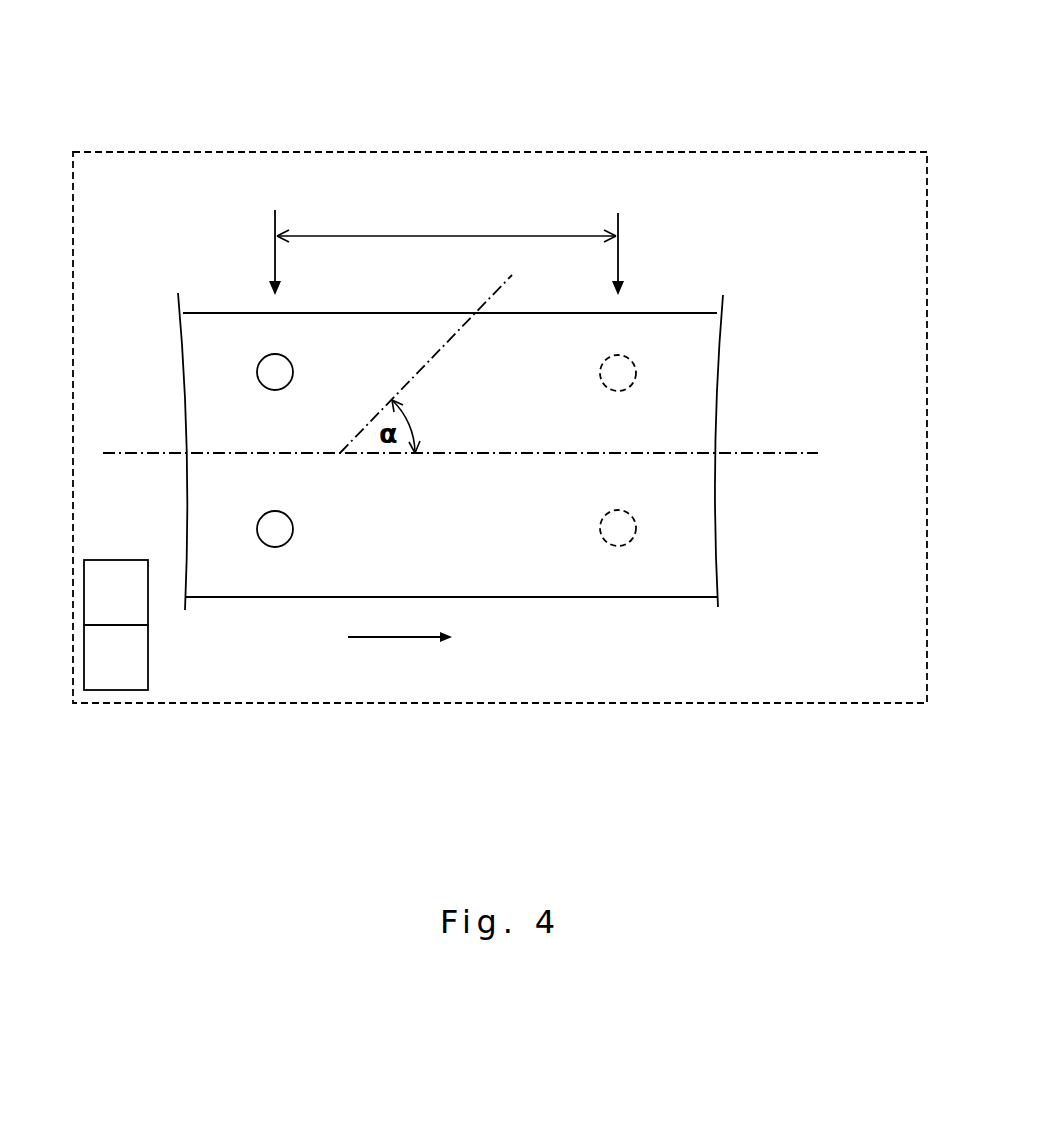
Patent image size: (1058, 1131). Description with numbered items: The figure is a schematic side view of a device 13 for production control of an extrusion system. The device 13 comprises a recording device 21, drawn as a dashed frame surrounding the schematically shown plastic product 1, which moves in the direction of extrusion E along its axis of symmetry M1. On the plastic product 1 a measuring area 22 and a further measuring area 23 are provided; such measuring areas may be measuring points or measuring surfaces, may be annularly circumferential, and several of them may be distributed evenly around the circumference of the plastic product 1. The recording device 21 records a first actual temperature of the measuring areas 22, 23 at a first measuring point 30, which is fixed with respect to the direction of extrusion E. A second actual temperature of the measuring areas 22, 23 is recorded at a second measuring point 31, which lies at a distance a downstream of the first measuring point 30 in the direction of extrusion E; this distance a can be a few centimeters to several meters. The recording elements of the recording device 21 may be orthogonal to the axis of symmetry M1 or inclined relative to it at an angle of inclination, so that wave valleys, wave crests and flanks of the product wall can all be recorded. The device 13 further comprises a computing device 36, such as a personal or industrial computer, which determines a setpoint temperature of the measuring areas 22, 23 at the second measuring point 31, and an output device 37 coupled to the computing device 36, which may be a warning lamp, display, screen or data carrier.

The plastic product 1 is at (699, 305).
The device 13 is at (496, 108).
The recording device 21 is at (840, 153).
The measuring area 22 is at (275, 354).
The measuring area 23 is at (275, 547).
The first measuring point 30 is at (275, 263).
The second measuring point 31 is at (618, 254).
The computing device 36 is at (137, 675).
The output device 37 is at (137, 610).
The axis of symmetry M1 is at (132, 455).
The distance a is at (446, 221).
The direction of extrusion E is at (400, 654).